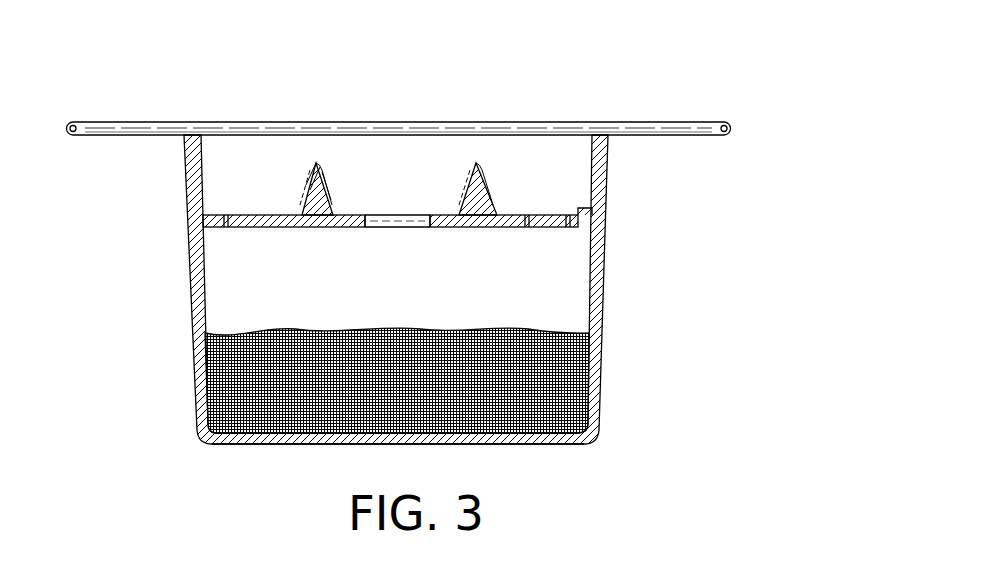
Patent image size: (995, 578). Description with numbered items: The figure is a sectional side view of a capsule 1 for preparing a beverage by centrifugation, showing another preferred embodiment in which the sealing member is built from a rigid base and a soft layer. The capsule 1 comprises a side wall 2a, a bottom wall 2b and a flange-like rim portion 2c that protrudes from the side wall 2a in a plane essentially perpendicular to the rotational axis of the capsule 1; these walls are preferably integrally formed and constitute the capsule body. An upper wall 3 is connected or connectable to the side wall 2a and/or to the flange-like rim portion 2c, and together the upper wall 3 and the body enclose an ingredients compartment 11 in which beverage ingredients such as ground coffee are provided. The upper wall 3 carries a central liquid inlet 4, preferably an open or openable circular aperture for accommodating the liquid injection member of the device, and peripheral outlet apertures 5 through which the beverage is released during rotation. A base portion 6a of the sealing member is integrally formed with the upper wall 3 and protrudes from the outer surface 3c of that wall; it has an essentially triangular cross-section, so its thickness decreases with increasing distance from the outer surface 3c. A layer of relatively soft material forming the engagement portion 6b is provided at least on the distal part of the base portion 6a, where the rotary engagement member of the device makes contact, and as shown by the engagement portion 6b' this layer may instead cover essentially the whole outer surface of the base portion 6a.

The capsule 1 is at (632, 58).
The side wall 2a is at (606, 288).
The bottom wall 2b is at (541, 446).
The flange-like rim portion 2c is at (700, 128).
The upper wall 3 is at (545, 227).
The outer surface 3c is at (583, 210).
The central liquid inlet 4 is at (388, 227).
The peripheral outlet apertures 5 is at (226, 227).
The base portion 6a is at (315, 227).
The engagement portion 6b is at (278, 178).
The engagement portion 6b' is at (361, 182).
The ingredients compartment 11 is at (574, 394).